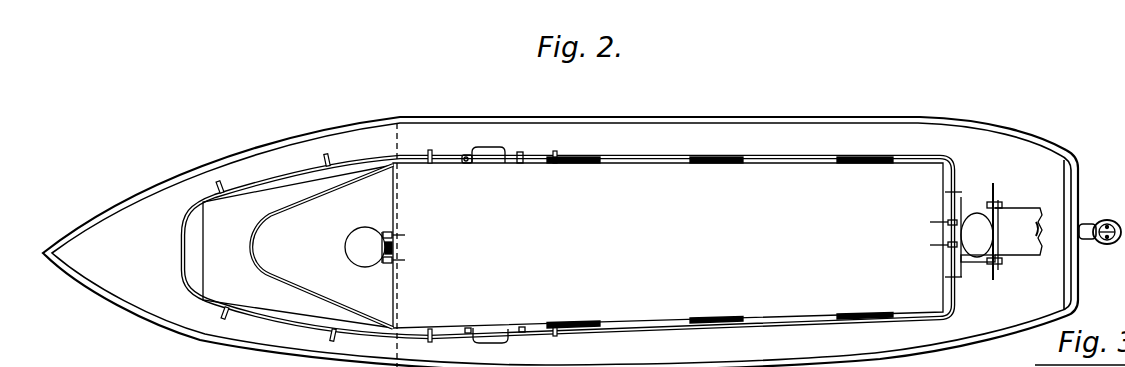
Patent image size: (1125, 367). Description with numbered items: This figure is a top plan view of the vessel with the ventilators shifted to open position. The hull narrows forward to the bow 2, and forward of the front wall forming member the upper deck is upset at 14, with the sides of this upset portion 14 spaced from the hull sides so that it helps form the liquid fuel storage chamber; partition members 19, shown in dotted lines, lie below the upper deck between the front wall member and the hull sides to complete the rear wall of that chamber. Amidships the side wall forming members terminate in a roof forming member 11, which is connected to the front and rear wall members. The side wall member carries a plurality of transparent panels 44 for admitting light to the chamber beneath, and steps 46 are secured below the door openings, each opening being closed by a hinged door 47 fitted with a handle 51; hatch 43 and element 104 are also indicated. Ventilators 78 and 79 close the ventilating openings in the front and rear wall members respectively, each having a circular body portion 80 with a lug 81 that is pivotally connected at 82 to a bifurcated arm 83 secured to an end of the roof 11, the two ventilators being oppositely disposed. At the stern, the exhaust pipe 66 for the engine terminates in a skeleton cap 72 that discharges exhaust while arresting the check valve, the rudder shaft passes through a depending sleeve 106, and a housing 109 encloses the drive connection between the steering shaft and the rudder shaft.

In FIG. 2, the bow 2 is at (48, 251).
In FIG. 2, the roof forming member 11 is at (668, 245).
In FIG. 2, the upset portion 14 is at (216, 247).
In FIG. 2, the partition members 19 is at (398, 136).
In FIG. 2, the hatch 43 is at (565, 157).
In FIG. 2, the transparent panels 44 is at (853, 160).
In FIG. 2, the steps 46 is at (490, 147).
In FIG. 2, the door 47 is at (468, 155).
In FIG. 2, the handle 51 is at (520, 152).
In FIG. 2, the exhaust pipe 66 is at (1103, 222).
In FIG. 2, the cap 72 is at (1098, 242).
In FIG. 2, the ventilator 78 is at (352, 248).
In FIG. 2, the ventilator 79 is at (970, 222).
In FIG. 2, the circular body portion 80 is at (362, 238).
In FIG. 2, the lug 81 is at (398, 244).
In FIG. 2, the pivotal connection 82 is at (392, 233).
In FIG. 2, the bifurcated arm 83 is at (393, 244).
In FIG. 2, the depending sleeve 106 is at (1040, 222).
In FIG. 2, the housing 109 is at (1020, 247).
In FIG. 3, the fig 3 element 104 is at (1045, 365).